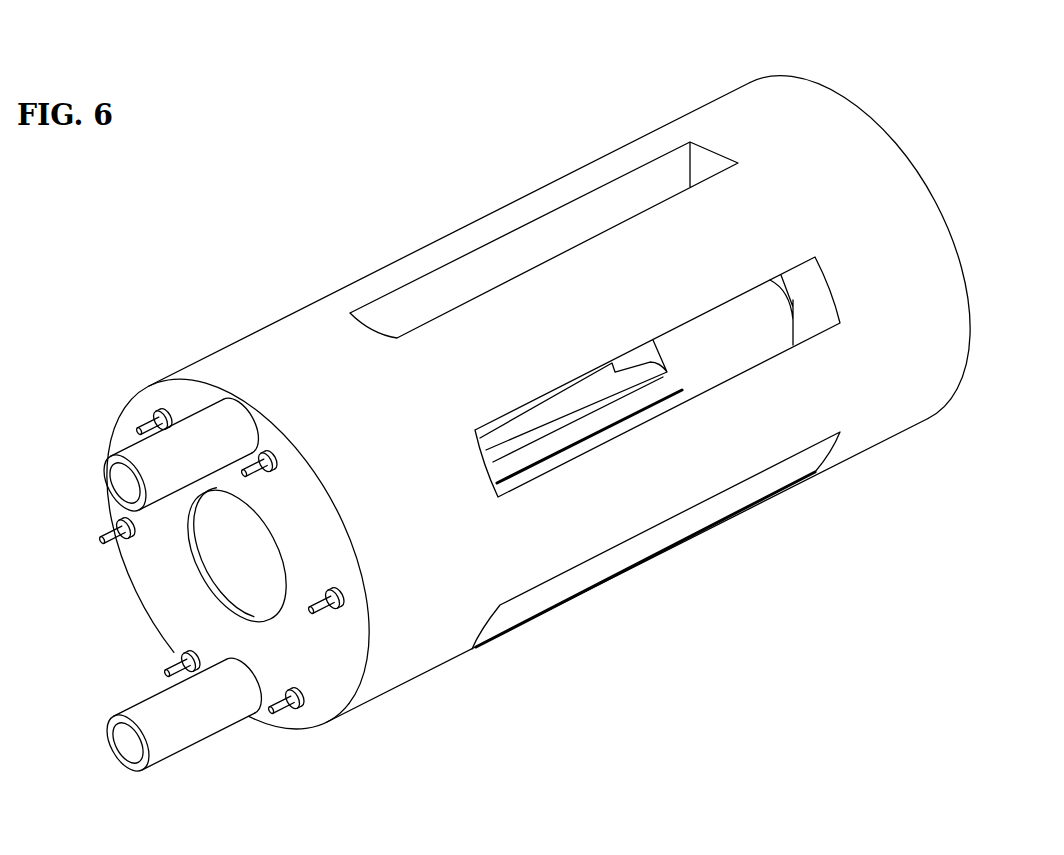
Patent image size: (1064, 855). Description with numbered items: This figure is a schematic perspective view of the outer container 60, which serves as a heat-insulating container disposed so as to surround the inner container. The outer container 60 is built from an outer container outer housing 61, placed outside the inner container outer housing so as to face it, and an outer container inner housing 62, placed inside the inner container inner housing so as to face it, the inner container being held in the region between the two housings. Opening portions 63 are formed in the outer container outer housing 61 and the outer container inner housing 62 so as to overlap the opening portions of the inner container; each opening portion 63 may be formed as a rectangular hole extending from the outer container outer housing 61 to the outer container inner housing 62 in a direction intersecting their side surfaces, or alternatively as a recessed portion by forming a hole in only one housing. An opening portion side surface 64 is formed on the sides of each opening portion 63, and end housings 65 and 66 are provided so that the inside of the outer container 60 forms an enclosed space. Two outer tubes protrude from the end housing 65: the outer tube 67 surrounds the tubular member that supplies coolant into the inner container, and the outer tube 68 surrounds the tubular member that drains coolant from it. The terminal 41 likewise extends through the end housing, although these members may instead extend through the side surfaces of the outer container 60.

The outer container 60 is at (931, 86).
The outer container outer housing 61 is at (243, 392).
The outer container inner housing 62 is at (207, 565).
The opening portions 63 is at (717, 328).
The opening portion side surface 64 is at (777, 348).
The end housing 65 is at (310, 725).
The end housing 66 is at (953, 242).
The outer tube 67 is at (160, 713).
The outer tube 68 is at (143, 458).
The terminal 41 is at (113, 547).